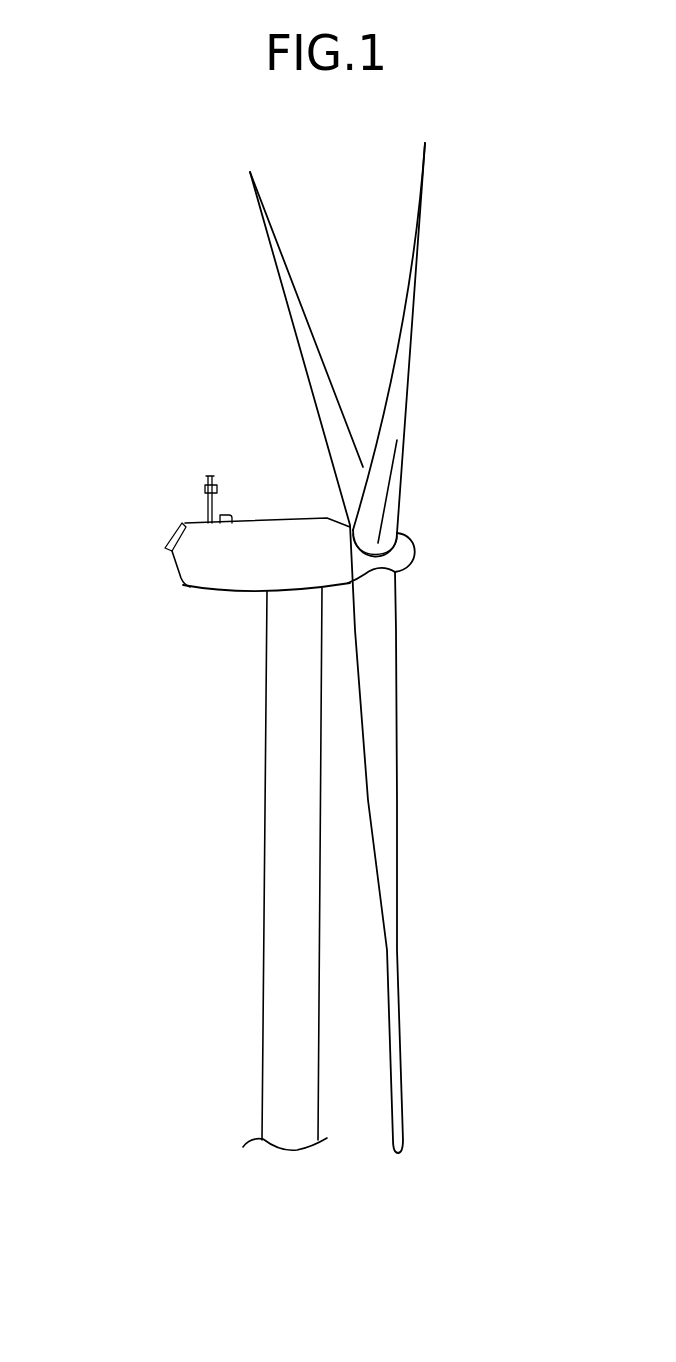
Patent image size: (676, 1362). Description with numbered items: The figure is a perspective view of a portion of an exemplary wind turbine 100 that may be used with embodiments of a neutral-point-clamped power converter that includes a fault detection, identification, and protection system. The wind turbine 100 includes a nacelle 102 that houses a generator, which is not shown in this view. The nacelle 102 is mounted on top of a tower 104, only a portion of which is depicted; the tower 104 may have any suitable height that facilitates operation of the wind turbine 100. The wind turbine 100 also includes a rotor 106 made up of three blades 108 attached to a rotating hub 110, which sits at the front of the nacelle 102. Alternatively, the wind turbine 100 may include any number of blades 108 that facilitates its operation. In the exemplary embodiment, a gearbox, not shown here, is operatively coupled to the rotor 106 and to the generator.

The wind turbine 100 is at (158, 238).
The nacelle 102 is at (213, 592).
The tower 104 is at (265, 828).
The rotor 106 is at (462, 335).
The blades 108 is at (283, 247).
The rotating hub 110 is at (415, 557).